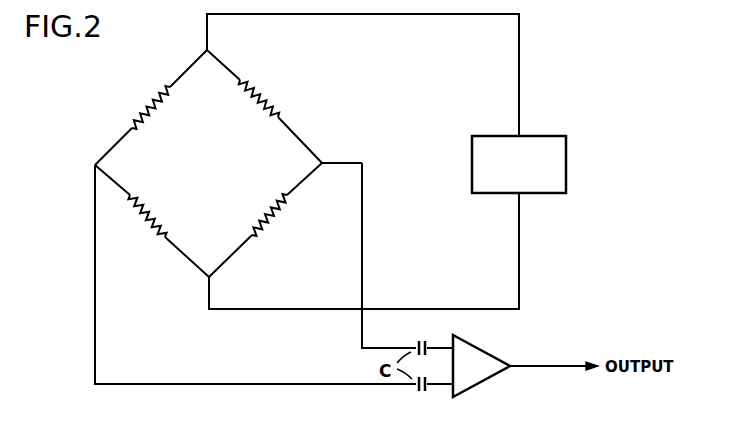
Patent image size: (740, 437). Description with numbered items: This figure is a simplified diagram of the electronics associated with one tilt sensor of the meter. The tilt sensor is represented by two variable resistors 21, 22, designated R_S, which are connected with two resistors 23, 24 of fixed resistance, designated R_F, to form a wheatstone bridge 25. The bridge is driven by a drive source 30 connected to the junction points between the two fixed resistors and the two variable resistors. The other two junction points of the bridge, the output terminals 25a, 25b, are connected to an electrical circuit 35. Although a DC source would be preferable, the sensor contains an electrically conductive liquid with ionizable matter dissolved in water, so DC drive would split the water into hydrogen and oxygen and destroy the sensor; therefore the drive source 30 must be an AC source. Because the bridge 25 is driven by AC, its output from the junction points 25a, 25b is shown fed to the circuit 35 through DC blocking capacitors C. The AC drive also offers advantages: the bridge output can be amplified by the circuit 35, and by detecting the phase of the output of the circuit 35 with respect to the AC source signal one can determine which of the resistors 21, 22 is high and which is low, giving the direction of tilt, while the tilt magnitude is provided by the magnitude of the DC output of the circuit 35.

The variable resistor 21 is at (164, 237).
The variable resistor 22 is at (252, 238).
The fixed resistor 23 is at (132, 128).
The fixed resistor 24 is at (278, 115).
The wheatstone bridge 25 is at (218, 175).
The bridge output junction point 25a is at (322, 163).
The bridge output junction point 25b is at (95, 165).
The drive source 30 is at (566, 182).
The electrical circuit 35 is at (478, 382).